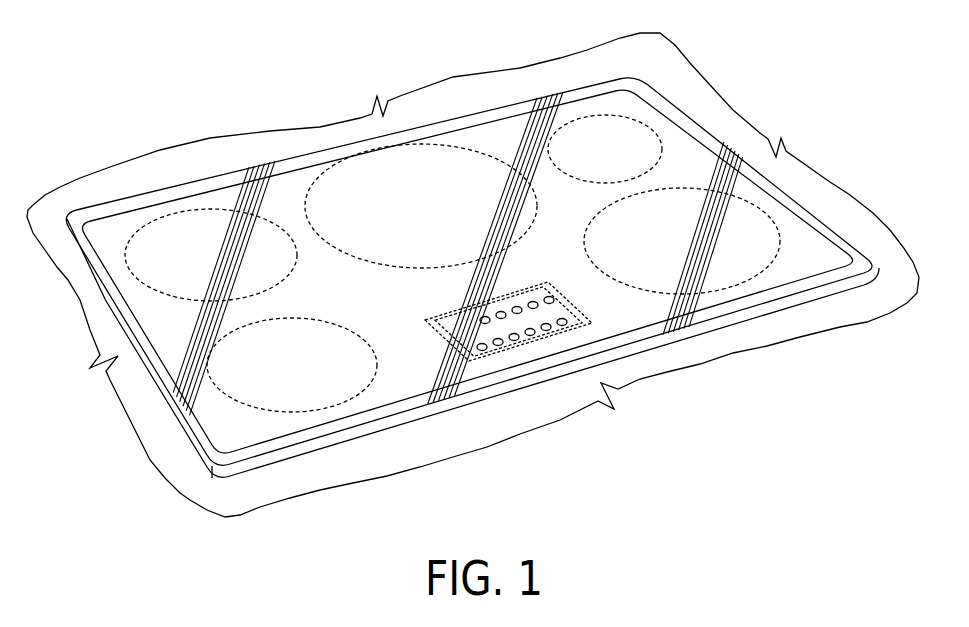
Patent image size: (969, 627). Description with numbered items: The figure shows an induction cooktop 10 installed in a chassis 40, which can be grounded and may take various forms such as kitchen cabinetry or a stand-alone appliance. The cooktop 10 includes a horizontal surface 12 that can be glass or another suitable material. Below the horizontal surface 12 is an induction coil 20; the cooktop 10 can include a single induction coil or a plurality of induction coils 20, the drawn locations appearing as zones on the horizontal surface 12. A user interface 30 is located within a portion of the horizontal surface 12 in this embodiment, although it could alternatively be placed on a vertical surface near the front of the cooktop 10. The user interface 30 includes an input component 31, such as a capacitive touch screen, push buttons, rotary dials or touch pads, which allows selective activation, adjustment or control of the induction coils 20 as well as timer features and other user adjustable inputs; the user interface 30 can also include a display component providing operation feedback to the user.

The induction cooktop 10 is at (455, 258).
The horizontal surface 12 is at (163, 323).
The induction coil 20 is at (757, 232).
The user interface 30 is at (551, 376).
The input component 31 is at (490, 347).
The chassis 40 is at (812, 320).